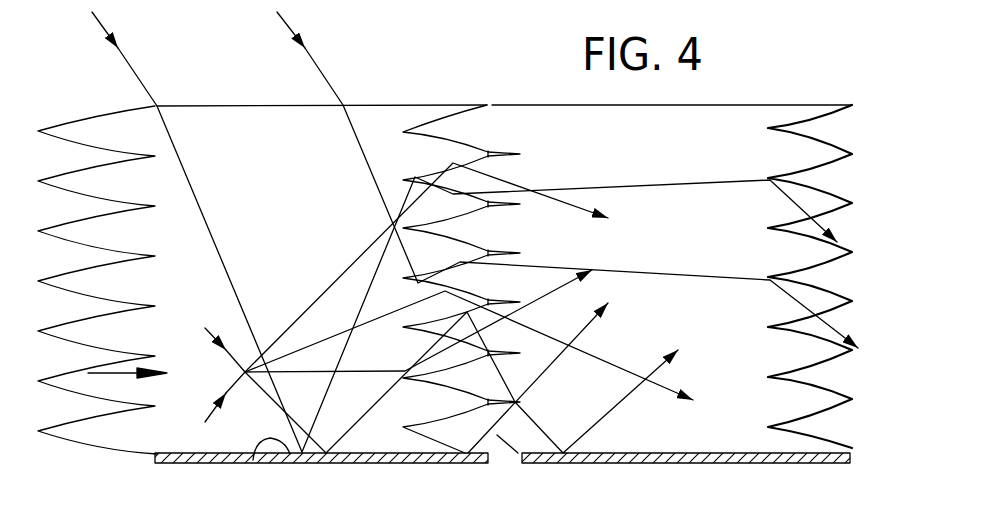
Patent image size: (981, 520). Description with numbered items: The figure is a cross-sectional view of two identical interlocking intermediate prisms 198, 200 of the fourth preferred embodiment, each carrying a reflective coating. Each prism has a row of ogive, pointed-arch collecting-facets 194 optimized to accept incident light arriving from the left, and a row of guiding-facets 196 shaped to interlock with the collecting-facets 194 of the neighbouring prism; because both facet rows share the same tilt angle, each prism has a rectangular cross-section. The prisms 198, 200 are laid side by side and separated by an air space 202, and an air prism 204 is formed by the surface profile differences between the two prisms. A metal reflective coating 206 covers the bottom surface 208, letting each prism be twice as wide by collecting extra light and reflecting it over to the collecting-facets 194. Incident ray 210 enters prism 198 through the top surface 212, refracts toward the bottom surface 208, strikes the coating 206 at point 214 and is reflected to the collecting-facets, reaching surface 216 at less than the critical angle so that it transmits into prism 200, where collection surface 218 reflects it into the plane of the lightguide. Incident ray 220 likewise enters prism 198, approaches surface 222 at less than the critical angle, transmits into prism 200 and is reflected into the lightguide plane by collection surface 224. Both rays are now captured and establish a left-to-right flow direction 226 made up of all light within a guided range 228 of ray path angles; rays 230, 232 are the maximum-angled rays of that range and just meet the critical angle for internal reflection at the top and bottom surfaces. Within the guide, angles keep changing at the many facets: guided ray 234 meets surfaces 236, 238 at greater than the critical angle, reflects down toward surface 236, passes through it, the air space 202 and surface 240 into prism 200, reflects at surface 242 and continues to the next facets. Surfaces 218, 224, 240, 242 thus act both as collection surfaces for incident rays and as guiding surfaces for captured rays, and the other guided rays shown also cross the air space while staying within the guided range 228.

The collecting-facets 194 is at (112, 437).
The guiding-facets 196 is at (398, 425).
The intermediate prism 198 is at (275, 159).
The intermediate prism 200 is at (685, 158).
The air space 202 is at (492, 105).
The air prism 204 is at (490, 152).
The reflective coating 206 is at (350, 463).
The bottom surface 208 is at (209, 453).
The incident ray 210 is at (81, 50).
The top surface 212 is at (293, 104).
The point 214 is at (253, 460).
The surface 216 is at (403, 182).
The collection surface 218 is at (460, 160).
The incident ray 220 is at (270, 50).
The surface 222 is at (418, 274).
The collection surface 224 is at (463, 295).
The flow direction 226 is at (125, 398).
The guided range 228 is at (223, 384).
The ray 230 is at (203, 330).
The ray 232 is at (203, 434).
The guided ray 234 is at (390, 372).
The surface 236 is at (456, 359).
The surface 238 is at (422, 335).
The surface 240 is at (503, 378).
The surface 242 is at (468, 396).